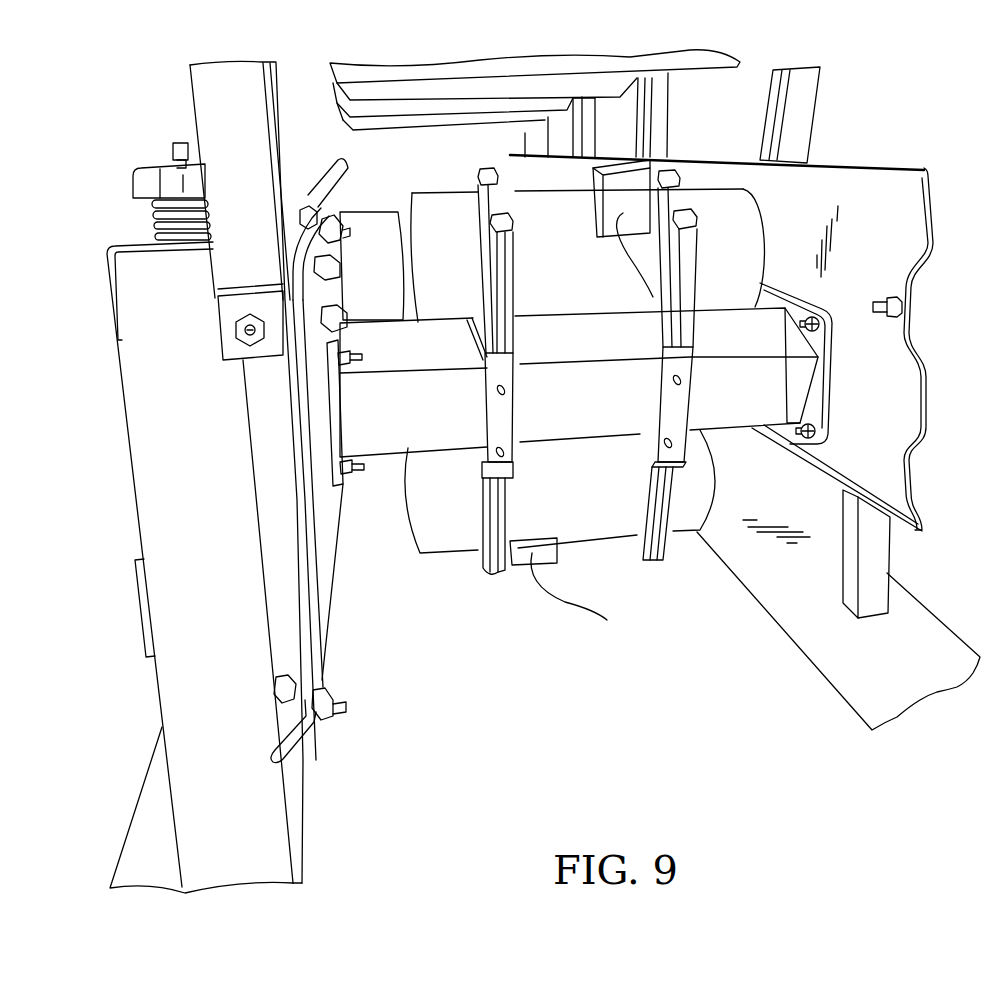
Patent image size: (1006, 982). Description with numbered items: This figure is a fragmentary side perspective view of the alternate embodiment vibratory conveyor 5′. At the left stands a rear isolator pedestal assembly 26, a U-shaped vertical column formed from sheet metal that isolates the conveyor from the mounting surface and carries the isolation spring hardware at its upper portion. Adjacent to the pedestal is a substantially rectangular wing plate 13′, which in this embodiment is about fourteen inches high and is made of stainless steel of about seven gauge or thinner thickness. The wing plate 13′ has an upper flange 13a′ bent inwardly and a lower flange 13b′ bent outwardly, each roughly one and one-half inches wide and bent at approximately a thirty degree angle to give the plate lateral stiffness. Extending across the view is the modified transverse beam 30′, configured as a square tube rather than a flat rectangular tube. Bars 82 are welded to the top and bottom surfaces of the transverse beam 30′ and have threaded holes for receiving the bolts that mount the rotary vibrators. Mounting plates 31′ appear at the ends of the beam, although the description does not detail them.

The vibratory conveyor 5′ is at (936, 121).
The wing plate 13′ is at (290, 434).
The upper flange 13a′ is at (328, 186).
The lower flange 13b′ is at (293, 748).
The rear isolator pedestal assembly 26 is at (216, 510).
The transverse beam 30′ is at (608, 417).
The mounting plate 31′ is at (337, 428).
The bar 82 is at (665, 358).